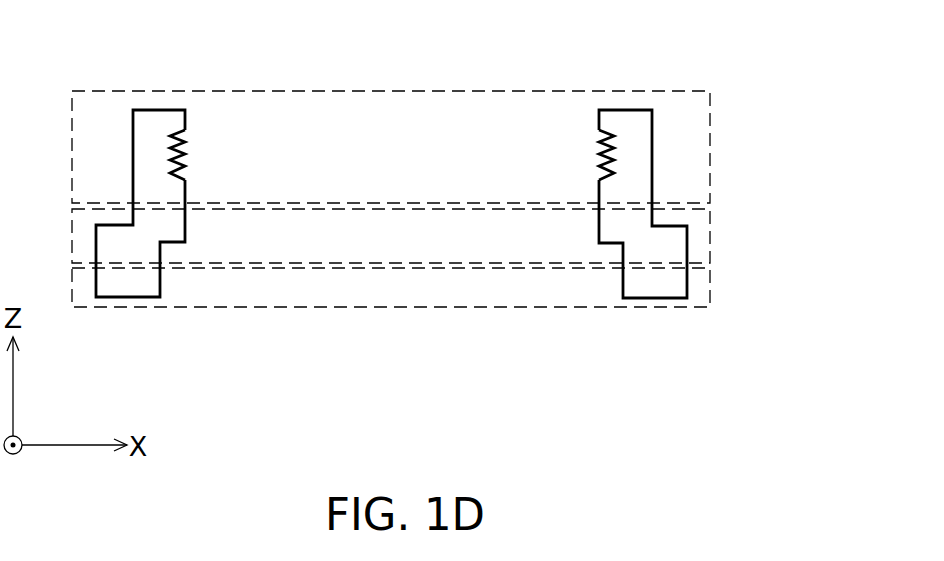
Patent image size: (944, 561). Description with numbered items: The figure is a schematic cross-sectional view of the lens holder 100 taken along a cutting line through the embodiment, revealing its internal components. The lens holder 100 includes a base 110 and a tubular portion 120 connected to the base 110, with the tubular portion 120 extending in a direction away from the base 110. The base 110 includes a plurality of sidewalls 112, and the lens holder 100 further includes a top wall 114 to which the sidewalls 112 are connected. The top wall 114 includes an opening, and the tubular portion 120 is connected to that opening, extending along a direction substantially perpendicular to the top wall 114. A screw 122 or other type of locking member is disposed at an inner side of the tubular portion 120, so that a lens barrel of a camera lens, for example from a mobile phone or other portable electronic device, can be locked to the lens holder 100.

The lens holder 100 is at (429, 254).
The base 110 is at (452, 254).
The sidewalls 112 is at (428, 288).
The top wall 114 is at (711, 235).
The tubular portion 120 is at (711, 122).
The screw 122 is at (200, 155).